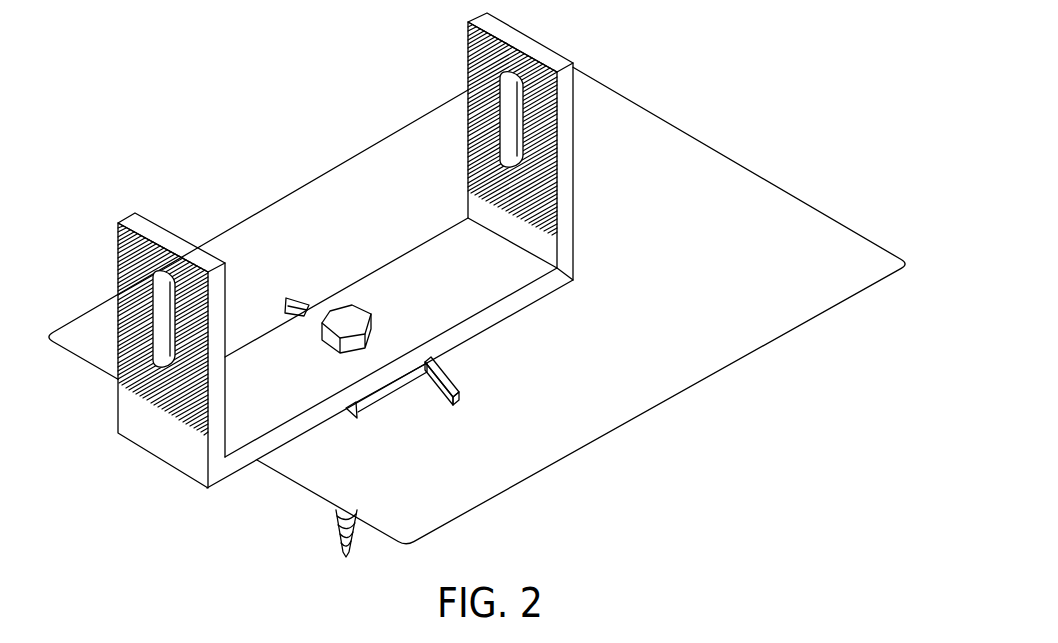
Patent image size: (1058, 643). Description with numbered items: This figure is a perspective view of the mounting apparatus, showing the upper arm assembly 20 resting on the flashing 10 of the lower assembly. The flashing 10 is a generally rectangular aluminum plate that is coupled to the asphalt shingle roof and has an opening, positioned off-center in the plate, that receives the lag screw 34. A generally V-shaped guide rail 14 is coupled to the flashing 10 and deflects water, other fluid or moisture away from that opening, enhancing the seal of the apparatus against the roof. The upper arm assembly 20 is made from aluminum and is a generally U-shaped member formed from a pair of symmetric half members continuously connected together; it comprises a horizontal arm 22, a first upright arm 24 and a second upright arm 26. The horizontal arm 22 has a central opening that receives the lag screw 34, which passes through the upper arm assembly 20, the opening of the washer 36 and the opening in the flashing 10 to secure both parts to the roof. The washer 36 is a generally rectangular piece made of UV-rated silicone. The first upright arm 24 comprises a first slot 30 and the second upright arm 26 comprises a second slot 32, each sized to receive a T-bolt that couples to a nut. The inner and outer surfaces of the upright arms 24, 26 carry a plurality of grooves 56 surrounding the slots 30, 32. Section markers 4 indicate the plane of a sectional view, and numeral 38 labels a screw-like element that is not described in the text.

The flashing 10 is at (312, 495).
The guide rail 14 is at (447, 398).
The upper arm assembly 20 is at (562, 330).
The horizontal arm 22 is at (481, 328).
The first upright arm 24 is at (217, 296).
The second upright arm 26 is at (573, 84).
The first slot 30 is at (118, 285).
The second slot 32 is at (507, 107).
The lag screw 34 is at (360, 317).
The washer 36 is at (362, 419).
The screw 38 is at (334, 541).
The grooves 56 is at (468, 50).
The section line 4- 4 is at (632, 173).